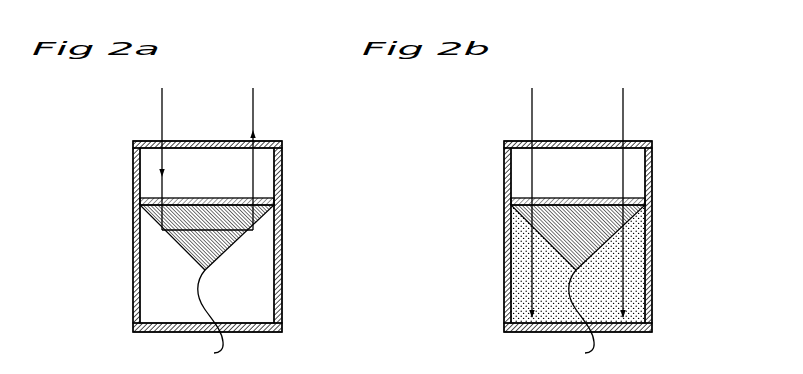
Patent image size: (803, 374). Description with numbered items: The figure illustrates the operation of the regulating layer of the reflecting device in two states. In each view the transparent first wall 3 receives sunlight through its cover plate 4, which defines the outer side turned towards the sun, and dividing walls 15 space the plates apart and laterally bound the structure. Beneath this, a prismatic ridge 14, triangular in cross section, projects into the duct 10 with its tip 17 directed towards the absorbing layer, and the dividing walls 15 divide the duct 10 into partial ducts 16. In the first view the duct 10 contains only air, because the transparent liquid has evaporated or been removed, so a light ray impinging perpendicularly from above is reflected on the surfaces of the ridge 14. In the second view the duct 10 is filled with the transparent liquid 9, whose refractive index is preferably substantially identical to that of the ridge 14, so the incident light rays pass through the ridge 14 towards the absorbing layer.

In FIG. 2a, the transparent first wall 3 is at (292, 171).
In FIG. 2b, the transparent first wall 3 is at (663, 171).
In FIG. 2a, the cover plate 4 is at (220, 141).
In FIG. 2b, the cover plate 4 is at (591, 141).
In FIG. 2b, the transparent liquid 9 is at (522, 307).
In FIG. 2a, the duct 10 is at (244, 282).
In FIG. 2b, the duct 10 is at (641, 274).
In FIG. 2a, the ridge 14 is at (176, 242).
In FIG. 2b, the ridge 14 is at (548, 241).
In FIG. 2a, the dividing walls 15 is at (133, 262).
In FIG. 2b, the dividing walls 15 is at (504, 262).
In FIG. 2a, the partial ducts 16 is at (268, 302).
In FIG. 2b, the partial ducts 16 is at (640, 303).
In FIG. 2a, the tip 17 is at (208, 317).
In FIG. 2b, the tip 17 is at (578, 317).